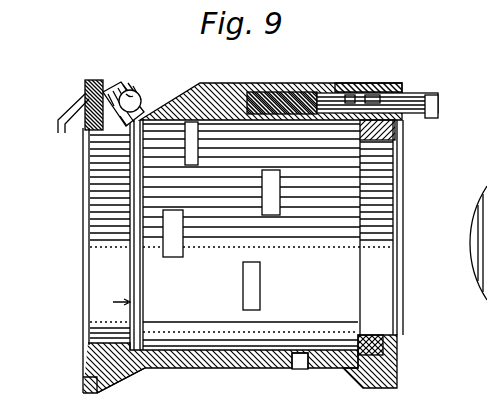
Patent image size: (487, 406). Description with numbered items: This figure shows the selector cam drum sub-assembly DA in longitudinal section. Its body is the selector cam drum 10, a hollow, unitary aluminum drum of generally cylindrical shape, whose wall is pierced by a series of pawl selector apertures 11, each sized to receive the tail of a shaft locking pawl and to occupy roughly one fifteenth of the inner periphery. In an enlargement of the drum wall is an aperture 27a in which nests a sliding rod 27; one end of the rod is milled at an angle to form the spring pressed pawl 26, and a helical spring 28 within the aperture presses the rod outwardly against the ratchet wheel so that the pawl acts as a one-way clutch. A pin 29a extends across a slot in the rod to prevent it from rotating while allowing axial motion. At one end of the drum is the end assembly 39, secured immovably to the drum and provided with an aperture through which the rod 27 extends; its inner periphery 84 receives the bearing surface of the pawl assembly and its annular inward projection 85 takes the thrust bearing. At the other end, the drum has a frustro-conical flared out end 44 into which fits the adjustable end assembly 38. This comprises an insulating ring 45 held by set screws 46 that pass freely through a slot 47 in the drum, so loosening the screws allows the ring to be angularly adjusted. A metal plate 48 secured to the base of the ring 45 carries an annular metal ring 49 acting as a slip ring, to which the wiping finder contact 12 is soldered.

The selector cam drum 10 is at (255, 344).
The pawl selector apertures 11 is at (275, 200).
The wiping finder contact 12 is at (76, 112).
The spring pressed pawl 26 is at (439, 102).
The sliding rod 27 is at (332, 96).
The aperture 27a is at (388, 88).
The helical spring 28 is at (290, 91).
The pin 29a is at (368, 95).
The end assembly 38 is at (140, 298).
The end assembly 39 is at (402, 148).
The flared out end 44 is at (120, 78).
The ring 45 is at (90, 356).
The set screws 46 is at (140, 94).
The slot 47 is at (156, 110).
The metal plate 48 is at (88, 212).
The annular metal ring 49 is at (104, 388).
The inner periphery 84 is at (398, 126).
The annular inward projection 85 is at (400, 174).
The selector cam drum sub-assembly DA is at (269, 77).